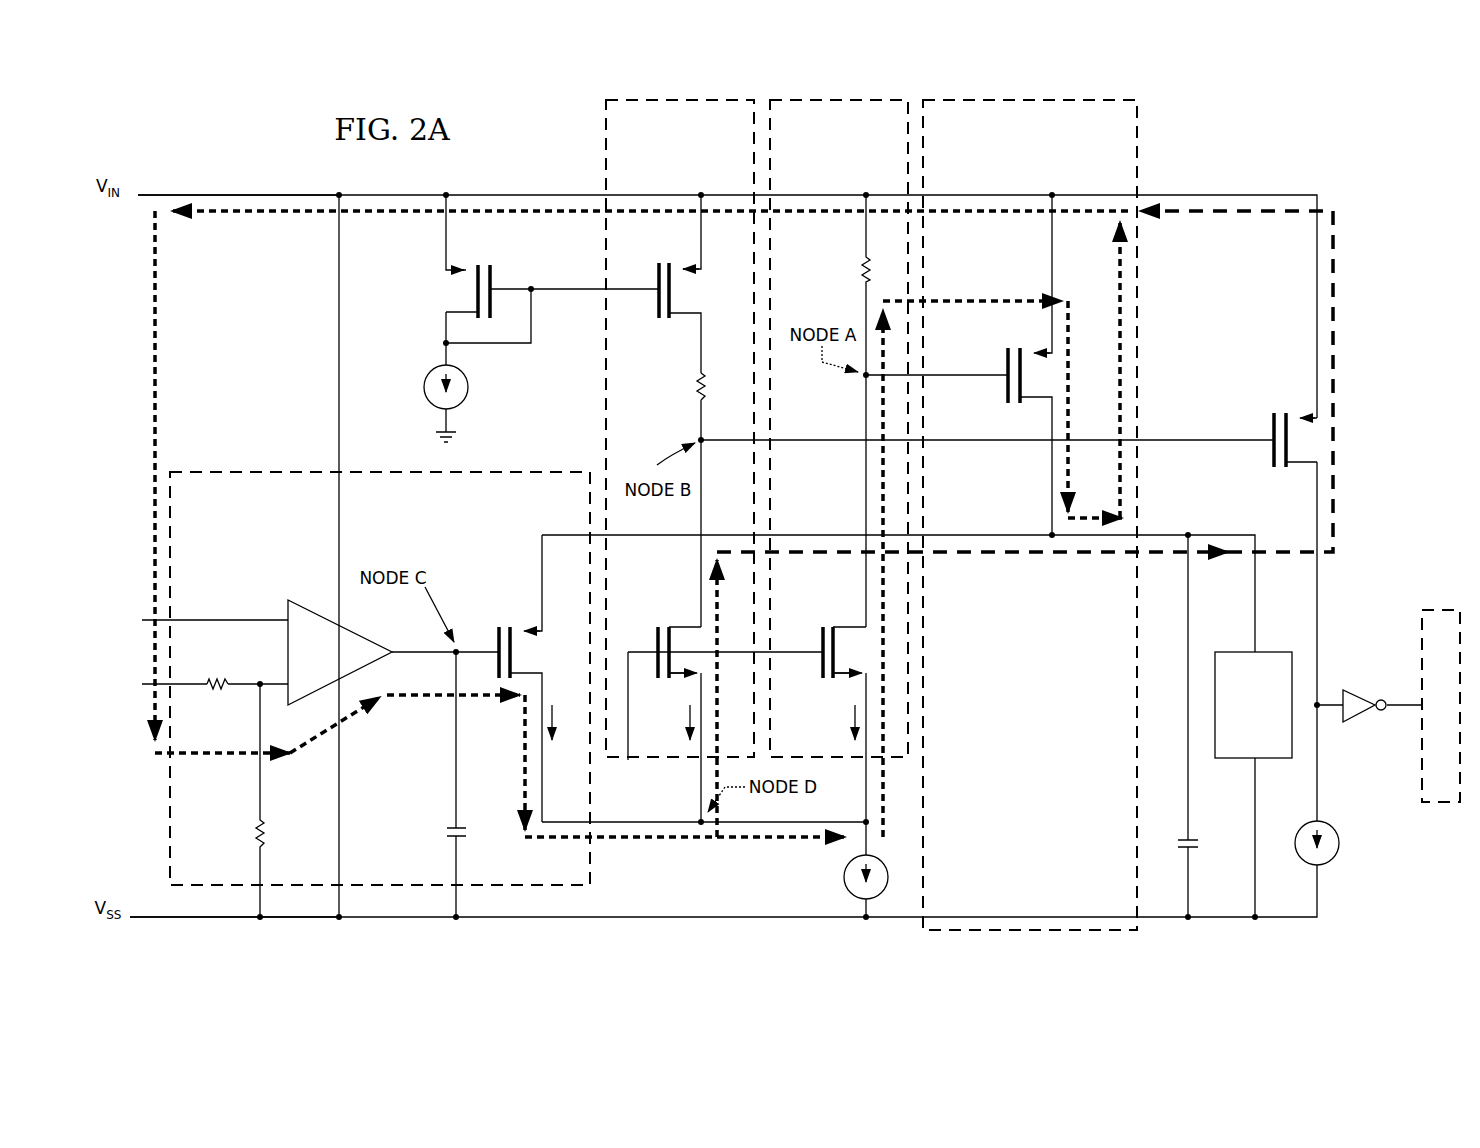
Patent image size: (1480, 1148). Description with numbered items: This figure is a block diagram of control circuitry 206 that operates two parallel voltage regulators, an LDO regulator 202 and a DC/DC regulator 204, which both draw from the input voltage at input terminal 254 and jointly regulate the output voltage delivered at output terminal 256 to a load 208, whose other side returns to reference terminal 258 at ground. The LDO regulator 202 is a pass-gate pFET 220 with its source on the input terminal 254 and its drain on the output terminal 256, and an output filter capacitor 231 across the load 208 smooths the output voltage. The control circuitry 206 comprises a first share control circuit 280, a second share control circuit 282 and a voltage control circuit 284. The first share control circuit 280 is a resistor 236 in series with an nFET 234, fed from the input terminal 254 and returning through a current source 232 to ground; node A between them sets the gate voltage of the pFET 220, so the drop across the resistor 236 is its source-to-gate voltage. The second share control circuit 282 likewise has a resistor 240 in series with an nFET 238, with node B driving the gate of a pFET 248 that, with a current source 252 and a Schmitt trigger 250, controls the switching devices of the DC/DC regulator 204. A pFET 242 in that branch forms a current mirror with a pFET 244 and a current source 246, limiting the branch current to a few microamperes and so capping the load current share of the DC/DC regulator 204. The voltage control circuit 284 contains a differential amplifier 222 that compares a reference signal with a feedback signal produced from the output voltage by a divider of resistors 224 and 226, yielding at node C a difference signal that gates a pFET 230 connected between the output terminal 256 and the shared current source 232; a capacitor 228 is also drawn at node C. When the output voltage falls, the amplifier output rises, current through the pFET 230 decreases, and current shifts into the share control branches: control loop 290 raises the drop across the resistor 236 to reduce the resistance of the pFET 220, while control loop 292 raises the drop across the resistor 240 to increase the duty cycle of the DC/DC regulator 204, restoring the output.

The LDO regulator 202 is at (1140, 160).
The DC/DC regulator 204 is at (1420, 644).
The control circuitry 206 is at (1333, 155).
The load 208 is at (1253, 786).
The pFET MP1 220 is at (1005, 381).
The differential amplifier 222 is at (313, 607).
The resistor R1 224 is at (214, 692).
The resistor R2 226 is at (256, 834).
The capacitor C1 228 is at (446, 833).
The pFET MP2 230 is at (497, 625).
The output filter capacitor CL 231 is at (1200, 848).
The current source I1 232 is at (843, 878).
The nFET MN1 234 is at (821, 625).
The resistor R3 236 is at (862, 268).
The nFET MN2 238 is at (656, 625).
The resistor R4 240 is at (697, 386).
The pFET MP3 242 is at (656, 283).
The pFET MP4 244 is at (492, 281).
The current source I2 246 is at (424, 384).
The pFET MP5 248 is at (1270, 451).
The Schmitt trigger 250 is at (1362, 720).
The current source I5 252 is at (1341, 845).
The input terminal 254 is at (232, 193).
The output terminal 256 is at (1186, 531).
The reference terminal 258 is at (156, 915).
The first share control circuit 280 is at (825, 98).
The second share control circuit 282 is at (604, 152).
The voltage control circuit 284 is at (252, 470).
The control loop 290 is at (968, 298).
The control loop 292 is at (985, 557).